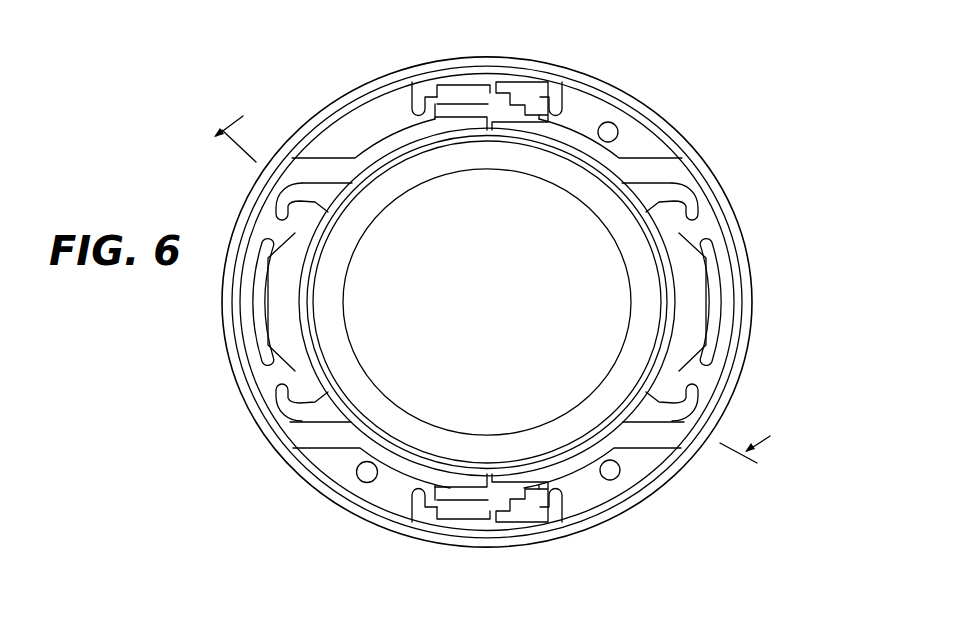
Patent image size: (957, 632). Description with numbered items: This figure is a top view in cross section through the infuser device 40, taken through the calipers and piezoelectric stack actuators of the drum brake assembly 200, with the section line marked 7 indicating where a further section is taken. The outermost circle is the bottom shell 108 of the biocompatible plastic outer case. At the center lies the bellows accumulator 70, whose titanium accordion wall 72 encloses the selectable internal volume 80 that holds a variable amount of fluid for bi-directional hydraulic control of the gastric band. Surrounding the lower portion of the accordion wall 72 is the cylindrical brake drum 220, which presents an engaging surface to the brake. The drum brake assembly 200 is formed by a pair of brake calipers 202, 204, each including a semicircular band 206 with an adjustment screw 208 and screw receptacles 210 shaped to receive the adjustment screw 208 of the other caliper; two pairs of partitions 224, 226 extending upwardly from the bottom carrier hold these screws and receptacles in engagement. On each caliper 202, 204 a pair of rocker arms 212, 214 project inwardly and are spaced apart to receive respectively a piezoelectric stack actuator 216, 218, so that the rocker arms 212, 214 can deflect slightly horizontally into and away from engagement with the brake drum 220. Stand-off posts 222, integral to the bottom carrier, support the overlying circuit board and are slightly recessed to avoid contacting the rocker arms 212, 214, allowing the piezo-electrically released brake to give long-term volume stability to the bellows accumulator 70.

The infuser device 40 is at (722, 134).
The bottom shell 108 is at (326, 492).
The drum brake assembly 200 is at (657, 454).
The bellows accumulator 70 is at (562, 428).
The selectable internal volume 80 is at (461, 394).
The semicircular band 206 is at (712, 196).
The rocker arm 212 is at (305, 237).
The rocker arm 214 is at (322, 362).
The piezoelectric stack actuator 218 is at (275, 320).
The piezoelectric stack actuator 216 is at (700, 275).
The brake caliper 202 is at (720, 227).
The brake caliper 204 is at (268, 373).
The brake drum 220 is at (690, 330).
The accordion wall 72 is at (640, 360).
The stand-off posts 222 is at (618, 128).
The adjustment screw 208 is at (496, 102).
The screw receptacles 210 is at (417, 110).
The partitions 224 is at (417, 103).
The partitions 226 is at (410, 510).
The section line 7- 7 is at (502, 274).